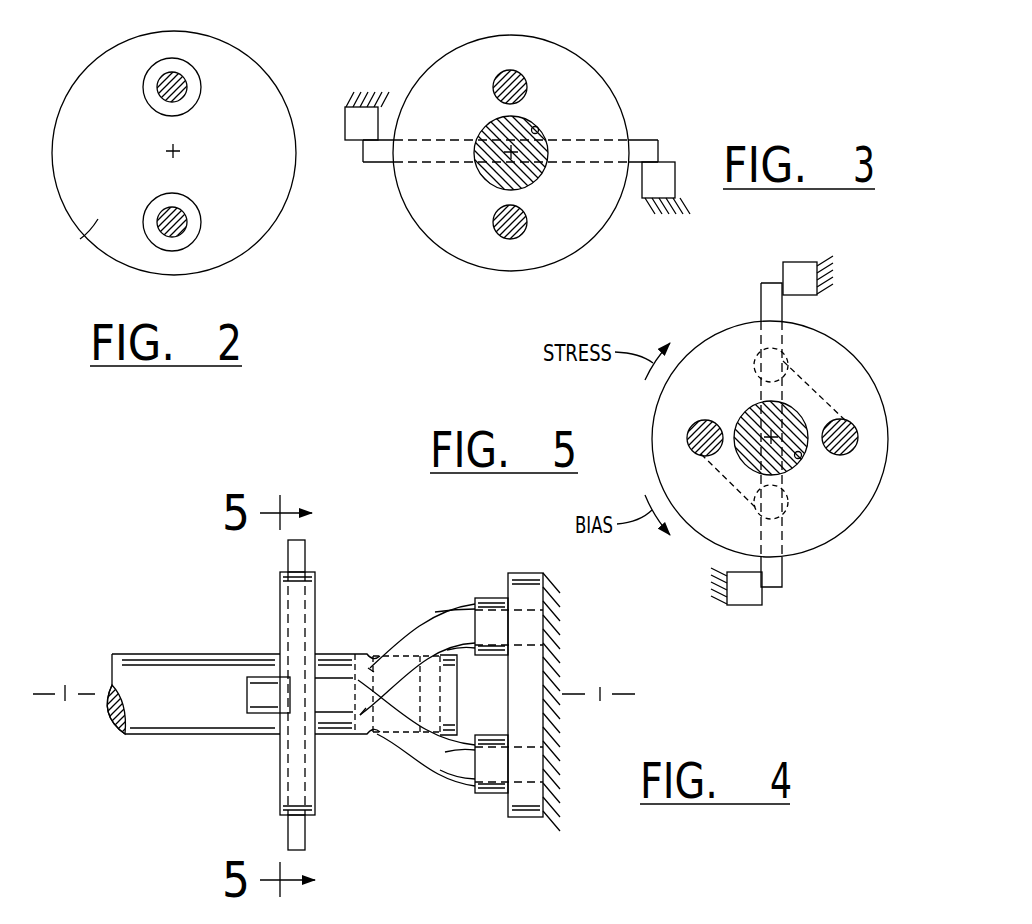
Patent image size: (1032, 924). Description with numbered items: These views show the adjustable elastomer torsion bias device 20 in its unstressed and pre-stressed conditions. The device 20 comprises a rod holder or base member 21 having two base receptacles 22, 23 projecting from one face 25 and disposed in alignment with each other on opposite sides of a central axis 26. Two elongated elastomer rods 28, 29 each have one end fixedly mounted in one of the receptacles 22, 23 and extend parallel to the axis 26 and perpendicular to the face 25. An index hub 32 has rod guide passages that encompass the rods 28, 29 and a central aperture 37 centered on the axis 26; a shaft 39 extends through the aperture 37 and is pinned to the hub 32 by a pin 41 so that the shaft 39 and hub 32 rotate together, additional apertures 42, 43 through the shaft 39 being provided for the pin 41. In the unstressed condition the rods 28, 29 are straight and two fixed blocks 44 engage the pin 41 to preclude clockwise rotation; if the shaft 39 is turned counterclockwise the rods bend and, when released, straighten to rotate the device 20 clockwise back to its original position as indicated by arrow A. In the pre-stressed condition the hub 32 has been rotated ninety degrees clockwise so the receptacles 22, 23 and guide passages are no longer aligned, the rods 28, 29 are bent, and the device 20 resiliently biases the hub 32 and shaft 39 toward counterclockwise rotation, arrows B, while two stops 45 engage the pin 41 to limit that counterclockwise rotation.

In FIG. 4, the adjustable elastomer torsion bias device 20 is at (348, 778).
In FIG. 2, the rod holder 21 is at (240, 222).
In FIG. 4, the rod holder 21 is at (527, 590).
In FIG. 2, the base receptacle 22 is at (152, 64).
In FIG. 4, the base receptacle 22 is at (492, 598).
In FIG. 2, the base receptacle 23 is at (193, 242).
In FIG. 4, the base receptacle 23 is at (494, 795).
In FIG. 2, the face 25 is at (80, 239).
In FIG. 4, the face 25 is at (508, 670).
In FIG. 2, the central axis 26 is at (176, 153).
In FIG. 3, the central axis 26 is at (497, 168).
In FIG. 5, the central axis 26 is at (740, 463).
In FIG. 4, the central axis 26 is at (65, 688).
In FIG. 2, the elastomer rod 28 is at (178, 72).
In FIG. 3, the elastomer rod 28 is at (525, 79).
In FIG. 5, the elastomer rod 28 is at (862, 436).
In FIG. 4, the elastomer rod 28 is at (265, 675).
In FIG. 2, the elastomer rod 29 is at (158, 237).
In FIG. 3, the elastomer rod 29 is at (497, 233).
In FIG. 5, the elastomer rod 29 is at (690, 425).
In FIG. 4, the elastomer rod 29 is at (432, 763).
In FIG. 3, the index hub 32 is at (568, 223).
In FIG. 5, the index hub 32 is at (843, 510).
In FIG. 4, the index hub 32 is at (283, 615).
In FIG. 3, the central aperture 37 is at (538, 128).
In FIG. 5, the central aperture 37 is at (803, 457).
In FIG. 4, the central aperture 37 is at (293, 740).
In FIG. 3, the shaft 39 is at (492, 134).
In FIG. 5, the shaft 39 is at (787, 465).
In FIG. 4, the shaft 39 is at (142, 723).
In FIG. 3, the pin 41 is at (638, 140).
In FIG. 5, the pin 41 is at (777, 575).
In FIG. 4, the pin 41 is at (307, 558).
In FIG. 4, the aperture 42 is at (368, 655).
In FIG. 4, the aperture 43 is at (445, 693).
In FIG. 3, the fixed block 44 is at (666, 173).
In FIG. 5, the stop 45 is at (800, 268).
In FIG. 3, the arrow A is at (388, 210).
In FIG. 5, the arrow B is at (806, 398).
In FIG. 4, the arrow B is at (150, 742).